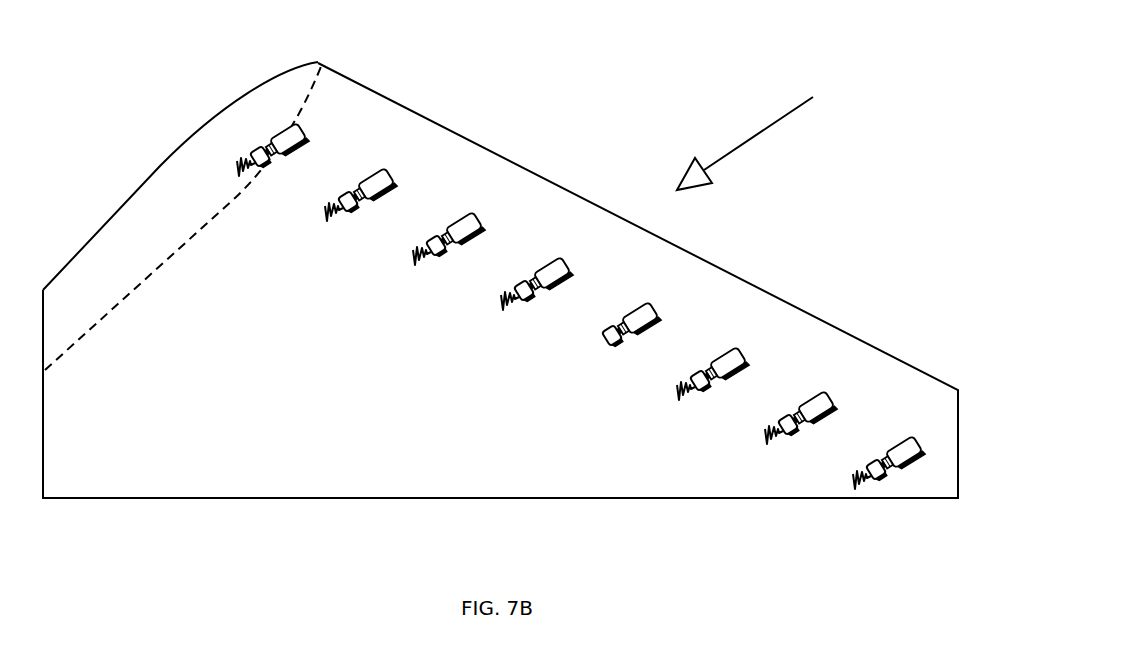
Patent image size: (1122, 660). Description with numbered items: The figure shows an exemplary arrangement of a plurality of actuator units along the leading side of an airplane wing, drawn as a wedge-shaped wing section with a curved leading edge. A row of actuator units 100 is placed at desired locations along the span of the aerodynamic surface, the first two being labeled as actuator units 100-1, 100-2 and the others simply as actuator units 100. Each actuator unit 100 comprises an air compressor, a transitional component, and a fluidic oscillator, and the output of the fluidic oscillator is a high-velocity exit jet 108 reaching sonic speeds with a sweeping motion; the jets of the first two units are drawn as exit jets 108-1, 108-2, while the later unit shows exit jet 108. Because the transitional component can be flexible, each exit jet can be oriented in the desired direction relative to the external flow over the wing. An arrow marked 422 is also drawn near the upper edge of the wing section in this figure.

The actuator unit 100-1 is at (291, 130).
The actuator unit 100-2 is at (374, 178).
The actuator unit 100 is at (739, 352).
The exit jet 108-1 is at (242, 186).
The exit jet 108-2 is at (338, 226).
The exit jet 108 is at (783, 445).
The direction arrow 422 is at (751, 134).